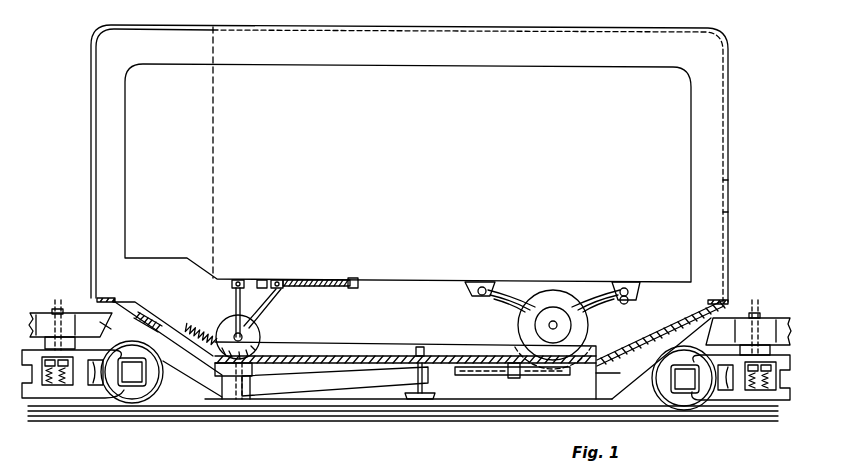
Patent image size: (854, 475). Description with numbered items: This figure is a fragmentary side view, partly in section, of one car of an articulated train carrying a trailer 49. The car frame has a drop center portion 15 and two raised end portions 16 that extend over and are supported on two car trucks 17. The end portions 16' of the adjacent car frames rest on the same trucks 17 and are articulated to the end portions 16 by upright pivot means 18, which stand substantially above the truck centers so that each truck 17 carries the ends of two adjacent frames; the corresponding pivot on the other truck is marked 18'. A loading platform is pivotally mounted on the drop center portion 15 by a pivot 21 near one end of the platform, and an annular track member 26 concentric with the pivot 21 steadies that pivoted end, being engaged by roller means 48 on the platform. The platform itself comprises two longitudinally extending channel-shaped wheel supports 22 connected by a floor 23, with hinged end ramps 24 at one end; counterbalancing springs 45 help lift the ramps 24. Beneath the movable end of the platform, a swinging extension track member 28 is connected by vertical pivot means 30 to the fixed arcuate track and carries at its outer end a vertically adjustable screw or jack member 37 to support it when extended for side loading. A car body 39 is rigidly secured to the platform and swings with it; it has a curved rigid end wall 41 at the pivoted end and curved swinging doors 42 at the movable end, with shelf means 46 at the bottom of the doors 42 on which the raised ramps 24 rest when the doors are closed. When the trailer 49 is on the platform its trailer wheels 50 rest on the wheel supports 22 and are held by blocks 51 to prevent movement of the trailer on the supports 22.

The drop center portion 15 is at (486, 400).
The raised end portions 16 is at (411, 309).
The end portions of adjacent car frames 16' is at (413, 307).
The car trucks 17 is at (99, 406).
The upright pivot means 18 is at (748, 303).
The king pin 18' is at (70, 299).
The pivot 21 is at (603, 374).
The wheel supports 22 is at (479, 352).
The floor 23 is at (440, 356).
The end ramps 24 is at (184, 326).
The annular track member 26 is at (546, 377).
The extension track member 28 is at (343, 386).
The vertical pivot means 30 is at (242, 385).
The adjustable screw or jack member 37 is at (430, 389).
The car body 39 is at (712, 190).
The end wall 41 is at (731, 210).
The swinging doors 42 is at (91, 128).
The springs 45 is at (234, 328).
The shelf means 46 is at (128, 307).
The roller means 48 is at (516, 379).
The trailer 49 is at (631, 78).
The trailer wheels 50 is at (256, 336).
The blocks 51 is at (514, 345).